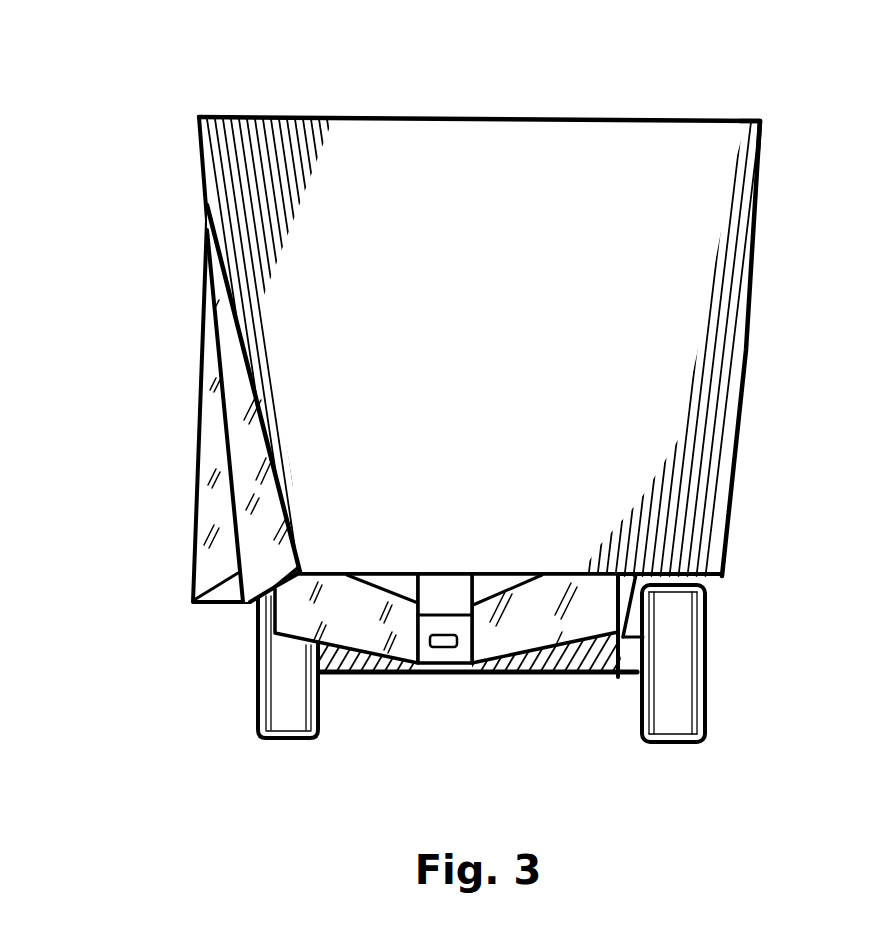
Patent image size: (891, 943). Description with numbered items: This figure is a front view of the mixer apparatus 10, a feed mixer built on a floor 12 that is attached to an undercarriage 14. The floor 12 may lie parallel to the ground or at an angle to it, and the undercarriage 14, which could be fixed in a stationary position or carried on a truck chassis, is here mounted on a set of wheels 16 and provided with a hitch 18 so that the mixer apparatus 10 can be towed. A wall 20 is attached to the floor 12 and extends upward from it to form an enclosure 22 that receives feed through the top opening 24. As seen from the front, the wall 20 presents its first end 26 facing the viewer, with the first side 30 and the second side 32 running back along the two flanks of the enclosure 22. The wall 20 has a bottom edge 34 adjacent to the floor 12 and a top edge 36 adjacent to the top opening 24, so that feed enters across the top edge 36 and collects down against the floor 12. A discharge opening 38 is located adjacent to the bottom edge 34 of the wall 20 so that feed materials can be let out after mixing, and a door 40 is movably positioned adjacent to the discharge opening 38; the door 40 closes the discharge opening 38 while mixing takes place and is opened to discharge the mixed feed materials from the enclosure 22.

The mixer apparatus 10 is at (453, 112).
The floor 12 is at (708, 585).
The undercarriage 14 is at (580, 630).
The wheels 16 is at (678, 692).
The hitch 18 is at (440, 645).
The wall 20 is at (738, 245).
The enclosure 22 is at (733, 325).
The top opening 24 is at (587, 115).
The first end 26 is at (512, 342).
The first side 30 is at (212, 163).
The second side 32 is at (738, 168).
The bottom edge 34 is at (703, 553).
The top edge 36 is at (710, 115).
The discharge opening 38 is at (223, 383).
The door 40 is at (228, 483).